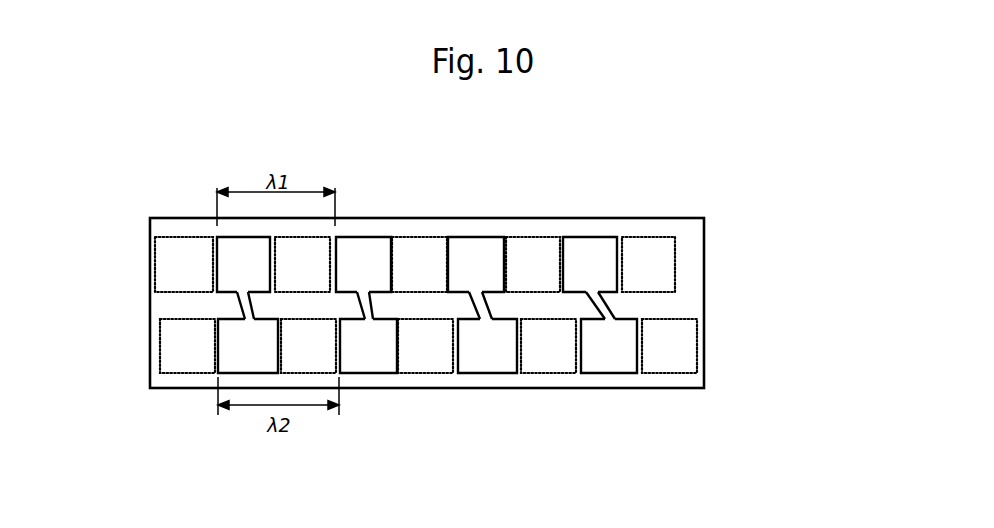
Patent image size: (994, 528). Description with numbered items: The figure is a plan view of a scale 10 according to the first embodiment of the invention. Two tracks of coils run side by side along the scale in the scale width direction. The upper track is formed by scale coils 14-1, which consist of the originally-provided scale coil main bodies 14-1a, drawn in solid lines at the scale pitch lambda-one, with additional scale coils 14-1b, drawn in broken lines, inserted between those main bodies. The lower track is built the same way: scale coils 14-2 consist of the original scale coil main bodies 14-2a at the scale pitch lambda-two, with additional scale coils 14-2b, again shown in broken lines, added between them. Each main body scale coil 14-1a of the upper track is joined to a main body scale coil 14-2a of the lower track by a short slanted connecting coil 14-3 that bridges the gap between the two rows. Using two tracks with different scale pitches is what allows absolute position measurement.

The scale 10 is at (704, 225).
The scale coils 14-1 is at (686, 273).
The scale coil main bodies 14-1a is at (473, 237).
The additional scale coils 14-1b is at (430, 237).
The scale coils 14-2 is at (704, 347).
The scale coil main bodies 14-2a is at (482, 377).
The additional scale coils 14-2b is at (440, 377).
The connecting coil 14-3 is at (608, 306).